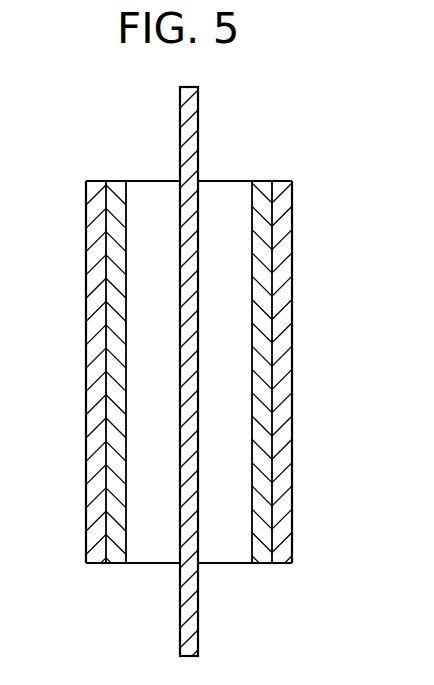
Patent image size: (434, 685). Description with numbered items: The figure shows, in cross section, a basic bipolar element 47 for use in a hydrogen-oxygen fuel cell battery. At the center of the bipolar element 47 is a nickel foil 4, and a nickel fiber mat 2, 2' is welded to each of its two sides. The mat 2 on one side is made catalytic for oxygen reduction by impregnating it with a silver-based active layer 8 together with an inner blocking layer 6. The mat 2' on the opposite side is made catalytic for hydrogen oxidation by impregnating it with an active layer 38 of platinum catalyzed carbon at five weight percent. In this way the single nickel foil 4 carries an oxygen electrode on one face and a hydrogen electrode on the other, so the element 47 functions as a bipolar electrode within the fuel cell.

The nickel foil 4 is at (198, 120).
The silver-based active layer 8 is at (212, 372).
The active layer of platinum catalyzed carbon 38 is at (92, 229).
The bipolar element 47 is at (302, 357).
The nickel fiber mat 2 is at (225, 372).
The nickel fiber mat 2' is at (153, 372).
The inner blocking layer 6 is at (113, 552).